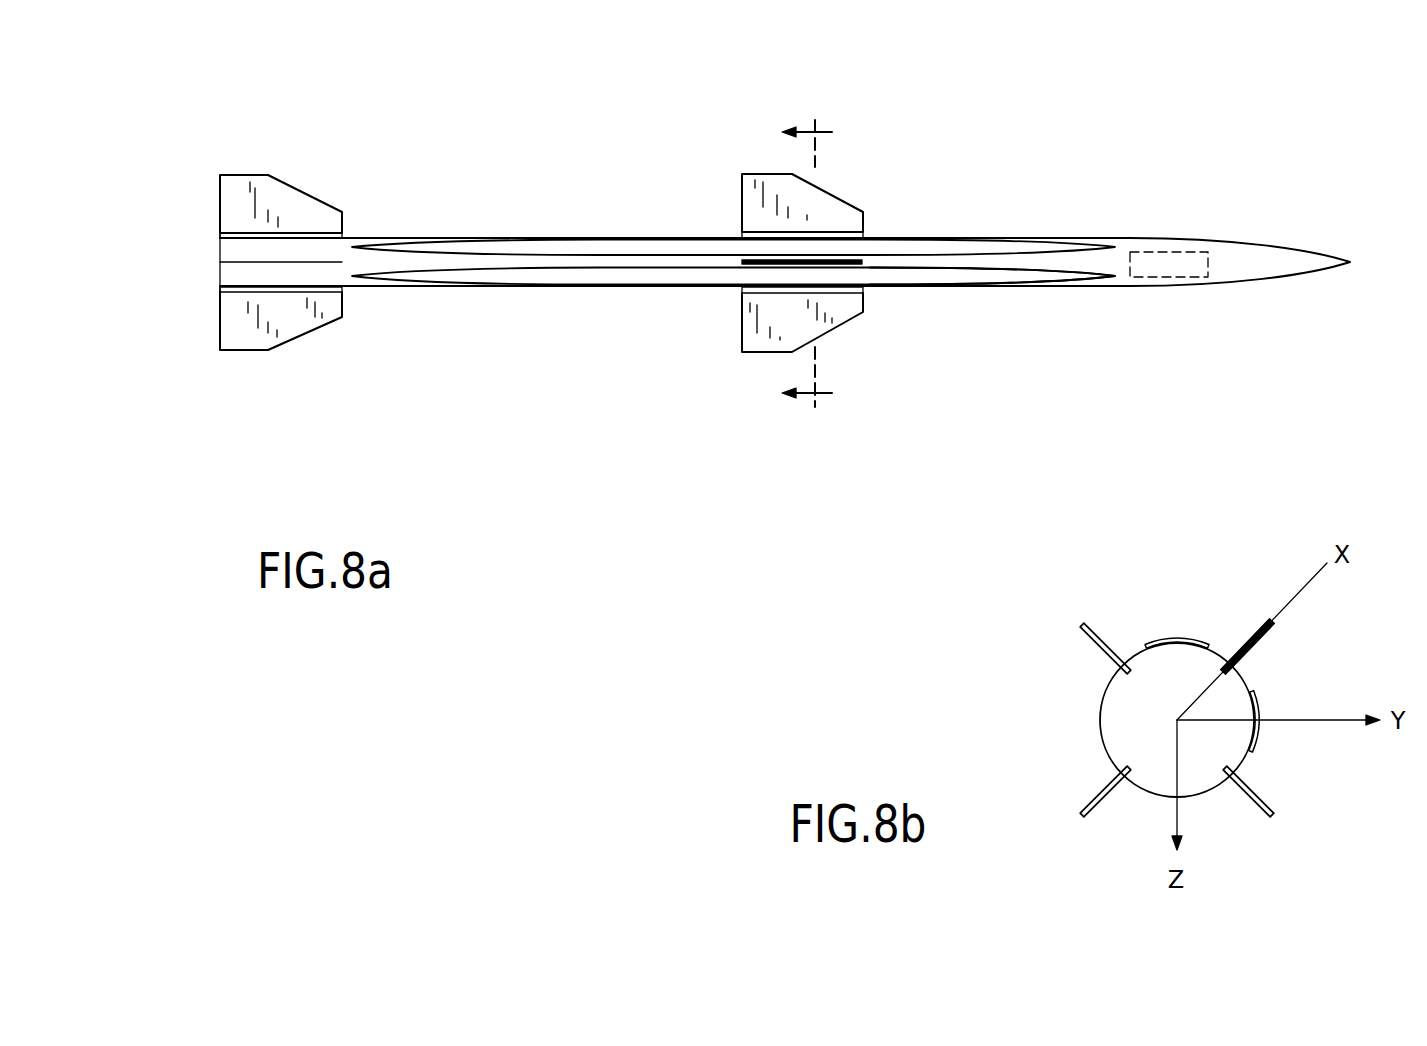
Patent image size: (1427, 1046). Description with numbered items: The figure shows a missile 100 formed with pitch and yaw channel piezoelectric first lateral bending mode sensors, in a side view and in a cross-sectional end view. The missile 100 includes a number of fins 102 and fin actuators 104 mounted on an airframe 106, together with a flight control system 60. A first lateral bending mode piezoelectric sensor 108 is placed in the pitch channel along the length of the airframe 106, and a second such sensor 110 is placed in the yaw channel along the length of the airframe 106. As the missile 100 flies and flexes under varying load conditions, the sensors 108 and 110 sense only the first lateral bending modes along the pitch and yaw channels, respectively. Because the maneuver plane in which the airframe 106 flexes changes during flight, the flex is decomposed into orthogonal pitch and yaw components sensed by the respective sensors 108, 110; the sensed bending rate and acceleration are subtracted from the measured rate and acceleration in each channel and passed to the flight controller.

In FIG. 8a, the missile 100 is at (1110, 133).
In FIG. 8a, the flight control system 60 is at (1172, 250).
In FIG. 8a, the fins 102 is at (248, 338).
In FIG. 8b, the fins 102 is at (1093, 637).
In FIG. 8a, the fin actuators 104 is at (224, 301).
In FIG. 8a, the airframe 106 is at (1060, 286).
In FIG. 8b, the airframe 106 is at (1100, 728).
In FIG. 8a, the first lateral bending mode piezoelectric sensor 108 is at (581, 237).
In FIG. 8b, the first lateral bending mode piezoelectric sensor 108 is at (1160, 642).
In FIG. 8a, the first lateral bending mode piezoelectric sensor 110 is at (545, 287).
In FIG. 8b, the first lateral bending mode piezoelectric sensor 110 is at (1253, 700).